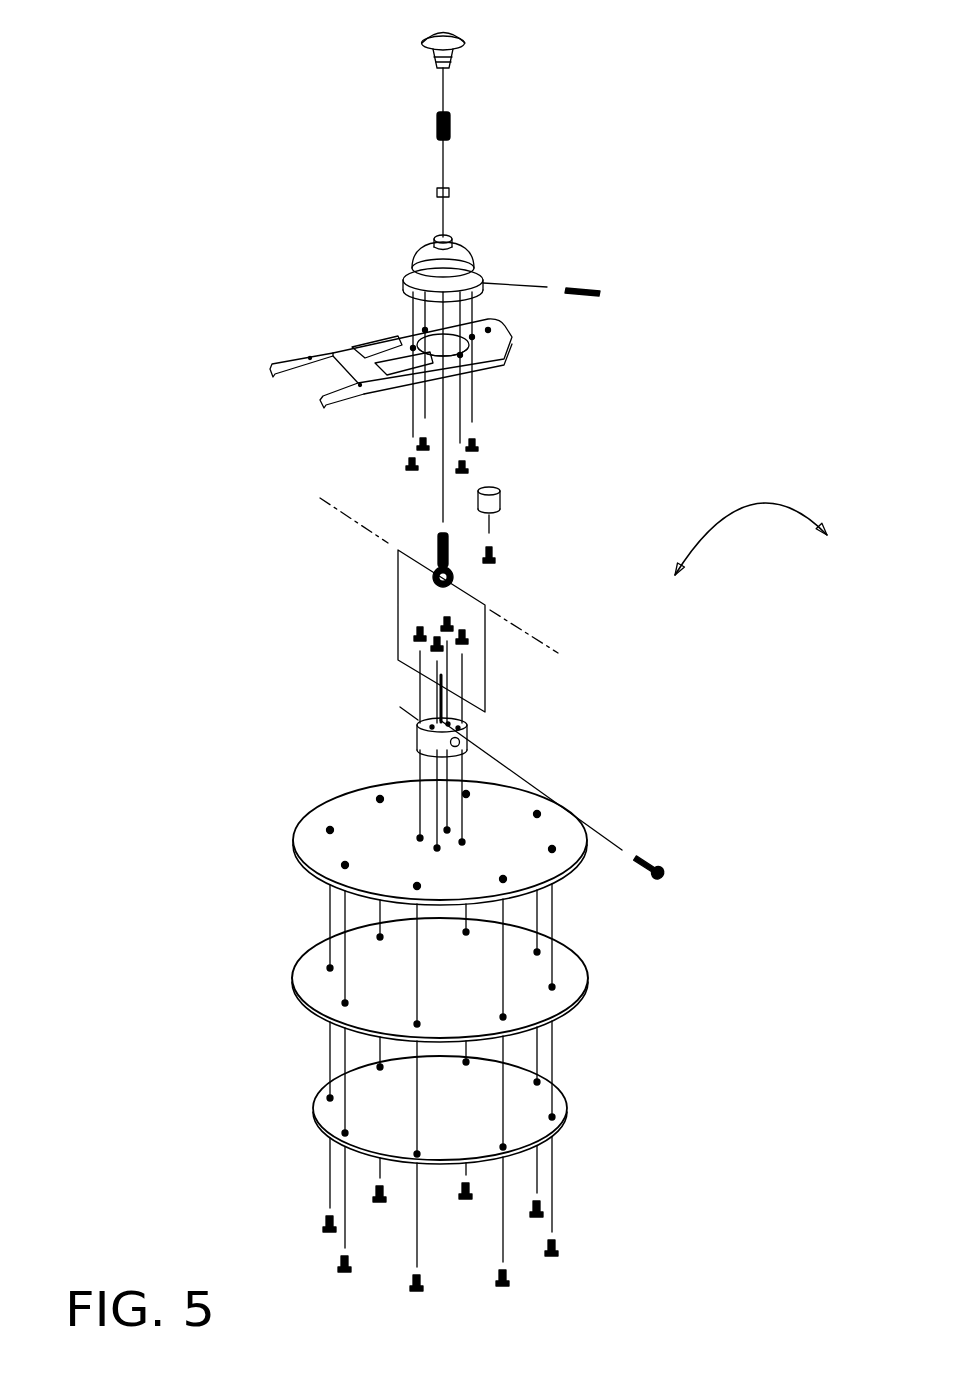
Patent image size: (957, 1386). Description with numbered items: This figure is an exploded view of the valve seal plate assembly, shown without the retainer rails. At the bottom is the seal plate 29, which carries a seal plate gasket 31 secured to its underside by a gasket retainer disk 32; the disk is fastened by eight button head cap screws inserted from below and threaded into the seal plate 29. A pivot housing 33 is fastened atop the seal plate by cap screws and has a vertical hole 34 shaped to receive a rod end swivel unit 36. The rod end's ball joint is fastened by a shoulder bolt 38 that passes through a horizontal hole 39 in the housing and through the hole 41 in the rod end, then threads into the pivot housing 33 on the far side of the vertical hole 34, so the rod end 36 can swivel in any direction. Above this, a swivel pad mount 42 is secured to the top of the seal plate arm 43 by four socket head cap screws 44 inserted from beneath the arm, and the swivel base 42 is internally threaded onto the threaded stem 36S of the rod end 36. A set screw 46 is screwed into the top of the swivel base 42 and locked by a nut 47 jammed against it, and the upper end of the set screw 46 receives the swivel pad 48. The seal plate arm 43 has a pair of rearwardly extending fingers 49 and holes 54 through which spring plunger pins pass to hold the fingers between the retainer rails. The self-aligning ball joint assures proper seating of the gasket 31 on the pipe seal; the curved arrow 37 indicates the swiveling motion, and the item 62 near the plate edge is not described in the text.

The swivel pad 48 is at (446, 40).
The set screw 46 is at (454, 123).
The nut 47 is at (451, 193).
The swivel pad mount 42 is at (470, 250).
The seal plate arm 43 is at (518, 350).
The fingers 49 is at (278, 364).
The holes 54 is at (310, 358).
The socket head cap screws 44 is at (478, 443).
The rotation direction arrow 37 is at (760, 502).
The threaded stem 36S is at (433, 545).
The rod end swivel unit 36 is at (433, 574).
The hole 41 is at (438, 584).
The vertical hole 34 is at (470, 718).
The horizontal hole 39 is at (461, 742).
The shoulder bolt 38 is at (678, 878).
The pivot housing 33 is at (415, 744).
The plate rim 62 is at (605, 833).
The seal plate 29 is at (555, 863).
The seal plate gasket 31 is at (550, 998).
The gasket retainer disk 32 is at (530, 1120).